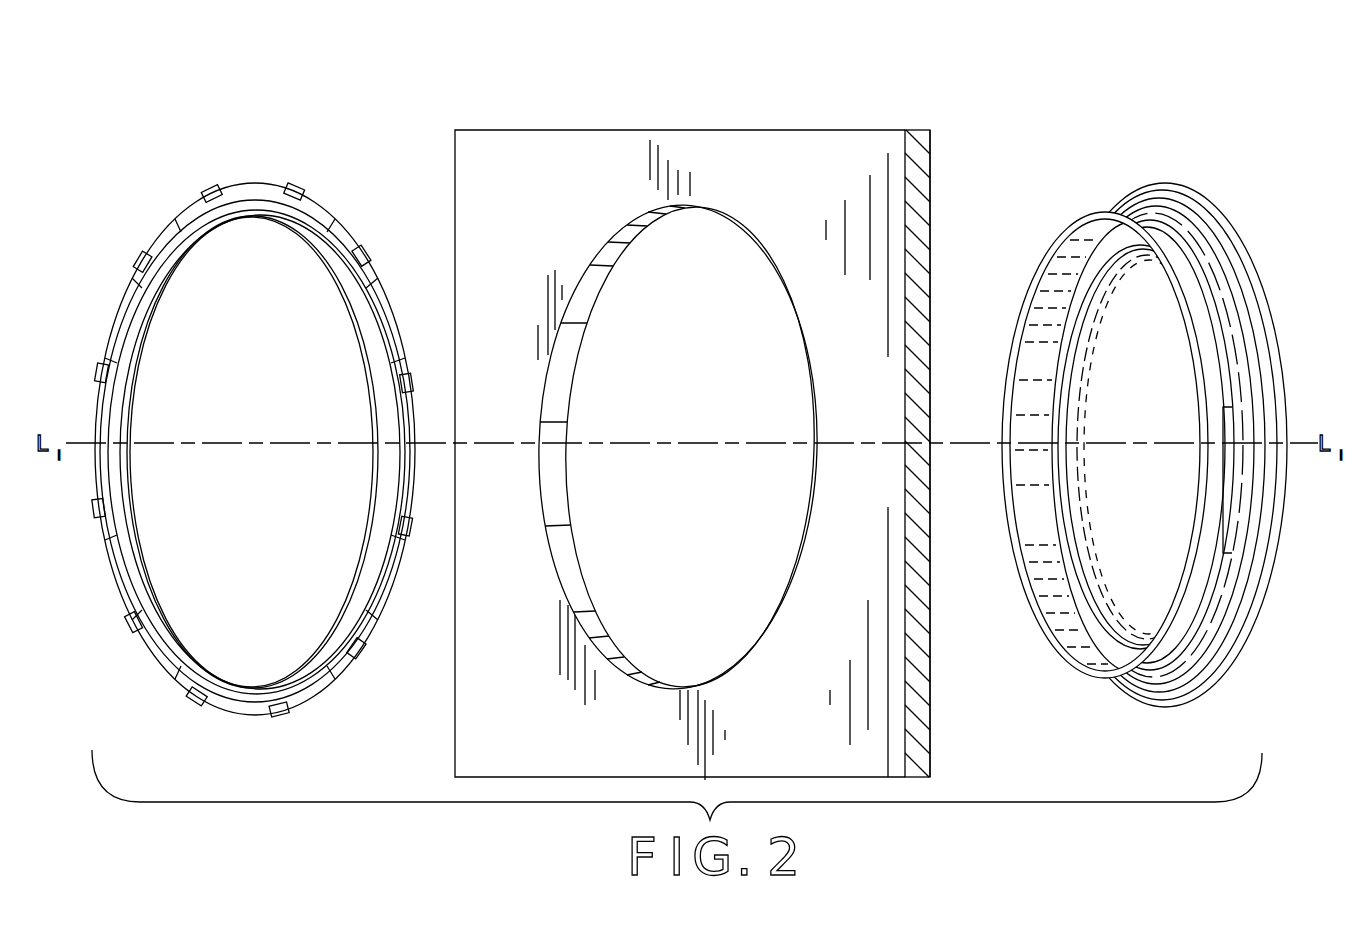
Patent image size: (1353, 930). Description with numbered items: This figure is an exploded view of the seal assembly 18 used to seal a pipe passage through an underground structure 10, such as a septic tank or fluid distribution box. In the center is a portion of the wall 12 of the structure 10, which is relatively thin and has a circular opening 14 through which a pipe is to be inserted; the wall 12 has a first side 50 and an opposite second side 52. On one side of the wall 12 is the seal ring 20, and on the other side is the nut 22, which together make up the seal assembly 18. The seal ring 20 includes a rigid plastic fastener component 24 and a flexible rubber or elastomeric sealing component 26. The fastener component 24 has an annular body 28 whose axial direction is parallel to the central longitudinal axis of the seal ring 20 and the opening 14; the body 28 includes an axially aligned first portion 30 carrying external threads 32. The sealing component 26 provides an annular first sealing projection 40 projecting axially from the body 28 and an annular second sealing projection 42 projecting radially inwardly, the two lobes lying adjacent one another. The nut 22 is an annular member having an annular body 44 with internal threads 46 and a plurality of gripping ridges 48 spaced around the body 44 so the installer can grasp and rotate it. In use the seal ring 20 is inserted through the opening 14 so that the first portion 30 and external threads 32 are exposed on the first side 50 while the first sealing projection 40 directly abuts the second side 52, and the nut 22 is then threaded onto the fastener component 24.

The underground structure 10 is at (742, 438).
The wall 12 is at (815, 158).
The circular opening 14 is at (596, 278).
The seal assembly 18 is at (1136, 421).
The seal ring 20 is at (1187, 424).
The nut 22 is at (253, 406).
The fastener component 24 is at (1082, 682).
The sealing component 26 is at (1250, 653).
The annular body 28 is at (1086, 479).
The first portion 30 is at (1086, 479).
The external threads 32 is at (1225, 517).
The first sealing projection 40 is at (1256, 279).
The second sealing projection 42 is at (1074, 376).
The annular body 44 is at (370, 310).
The internal threads 46 is at (133, 395).
The gripping ridges 48 is at (360, 258).
The first side 50 is at (855, 335).
The second side 52 is at (937, 290).